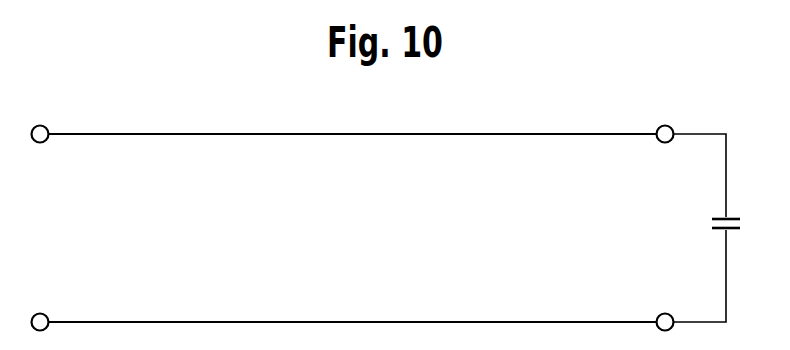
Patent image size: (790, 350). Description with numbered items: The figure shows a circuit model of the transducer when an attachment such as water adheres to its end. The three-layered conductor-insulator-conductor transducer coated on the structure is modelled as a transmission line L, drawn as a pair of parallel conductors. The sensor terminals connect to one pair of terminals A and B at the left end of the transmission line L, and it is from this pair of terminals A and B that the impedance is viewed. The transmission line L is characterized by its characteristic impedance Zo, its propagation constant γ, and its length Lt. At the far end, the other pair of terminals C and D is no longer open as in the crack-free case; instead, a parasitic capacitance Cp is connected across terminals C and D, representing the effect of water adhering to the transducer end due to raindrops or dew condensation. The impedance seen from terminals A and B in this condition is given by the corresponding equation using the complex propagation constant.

The terminal A is at (42, 125).
The terminal B is at (42, 312).
The terminal C is at (668, 125).
The terminal D is at (668, 313).
The transmission line L is at (458, 132).
The length of the transmission line Lt is at (352, 213).
The characteristic impedance of the transmission line Zo is at (352, 228).
The parasitic capacitance Cp is at (707, 228).